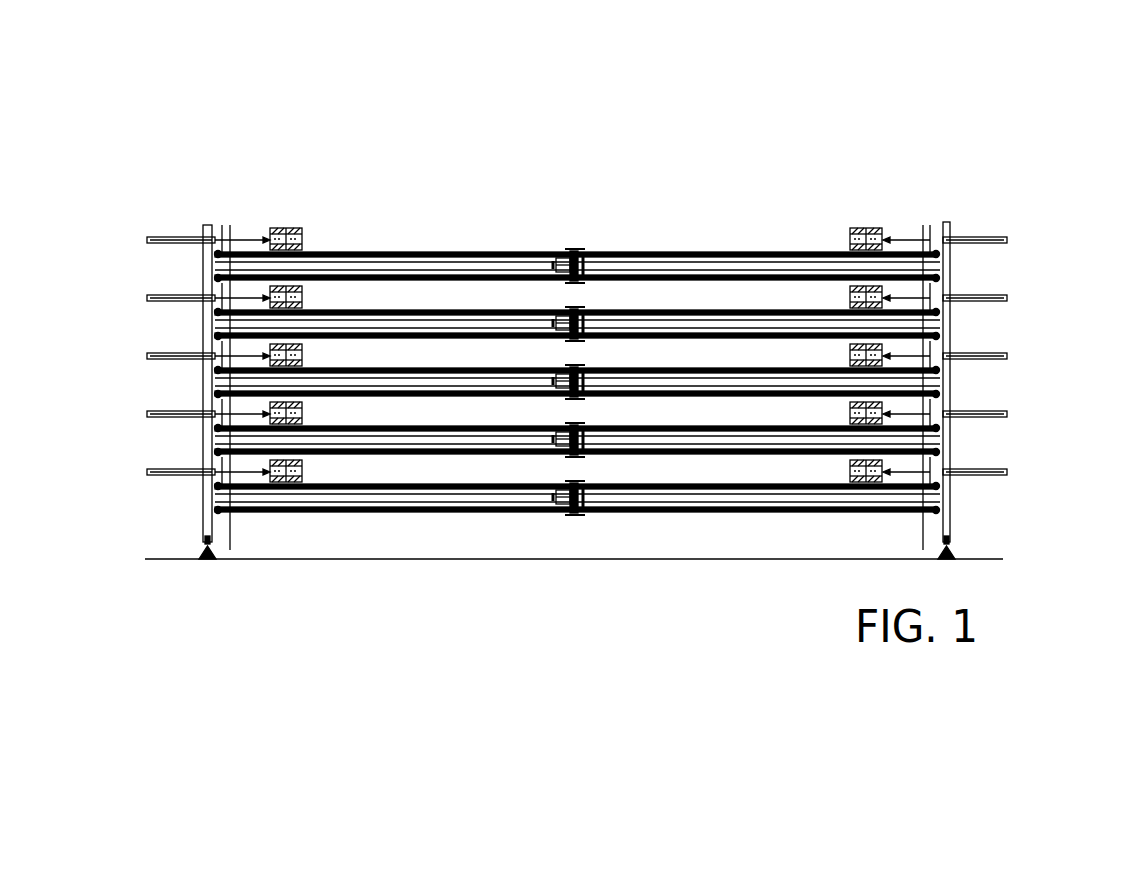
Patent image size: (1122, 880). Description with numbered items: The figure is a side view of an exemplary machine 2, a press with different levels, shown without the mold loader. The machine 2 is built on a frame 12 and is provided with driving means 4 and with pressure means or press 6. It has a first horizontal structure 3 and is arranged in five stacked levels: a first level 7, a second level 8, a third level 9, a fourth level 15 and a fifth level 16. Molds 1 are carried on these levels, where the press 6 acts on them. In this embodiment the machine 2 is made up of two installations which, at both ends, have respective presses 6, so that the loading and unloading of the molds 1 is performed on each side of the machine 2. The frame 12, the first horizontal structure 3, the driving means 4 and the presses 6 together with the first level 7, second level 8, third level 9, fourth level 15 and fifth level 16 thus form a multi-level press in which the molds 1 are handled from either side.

The mold 1 is at (283, 228).
The machine 2 is at (985, 145).
The first horizontal structure 3 is at (433, 490).
The driving means 4 is at (573, 252).
The pressure means or press 6 is at (1005, 236).
The first level 7 is at (942, 510).
The second level 8 is at (940, 439).
The third level 9 is at (940, 381).
The frame 12 is at (946, 222).
The fourth level 15 is at (940, 324).
The fifth level 16 is at (940, 263).